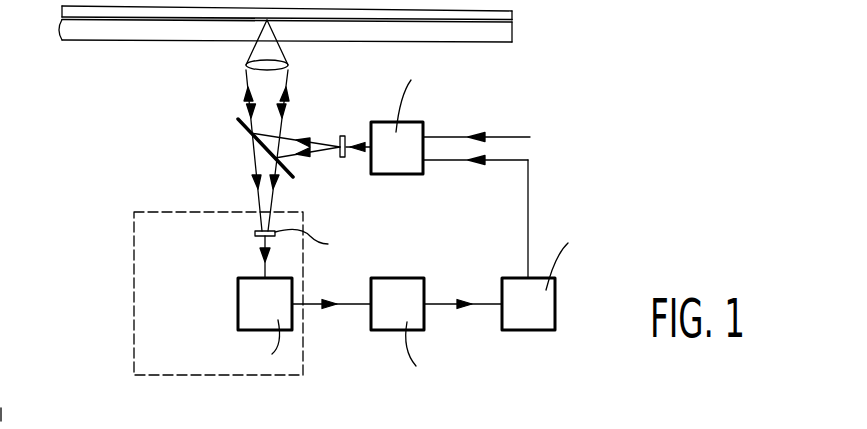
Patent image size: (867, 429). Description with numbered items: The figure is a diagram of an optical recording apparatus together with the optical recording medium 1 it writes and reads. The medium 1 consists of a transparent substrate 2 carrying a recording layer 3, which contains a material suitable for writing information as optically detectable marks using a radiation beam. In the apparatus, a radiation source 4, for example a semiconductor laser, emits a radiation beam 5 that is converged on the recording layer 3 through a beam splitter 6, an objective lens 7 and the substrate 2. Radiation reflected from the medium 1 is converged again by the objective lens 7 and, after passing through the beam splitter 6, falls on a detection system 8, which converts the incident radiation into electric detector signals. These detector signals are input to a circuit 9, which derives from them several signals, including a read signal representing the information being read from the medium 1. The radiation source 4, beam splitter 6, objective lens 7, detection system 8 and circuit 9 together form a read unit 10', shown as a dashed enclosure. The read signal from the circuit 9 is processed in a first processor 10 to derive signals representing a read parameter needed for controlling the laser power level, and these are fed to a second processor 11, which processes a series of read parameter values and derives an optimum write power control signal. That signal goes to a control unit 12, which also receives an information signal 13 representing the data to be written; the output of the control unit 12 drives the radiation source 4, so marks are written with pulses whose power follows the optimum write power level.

The optical recording medium 1 is at (547, 7).
The transparent substrate 2 is at (512, 41).
The recording layer 3 is at (496, 21).
The radiation source 4 is at (342, 135).
The radiation beam 5 is at (290, 140).
The beam splitter 6 is at (240, 133).
The objective lens 7 is at (246, 66).
The detection system 8 is at (255, 233).
The circuit 9 is at (242, 300).
The first processor 10 is at (436, 339).
The read unit 10' is at (218, 293).
The second processor 11 is at (518, 322).
The control unit 12 is at (407, 167).
The information signal 13 is at (513, 135).